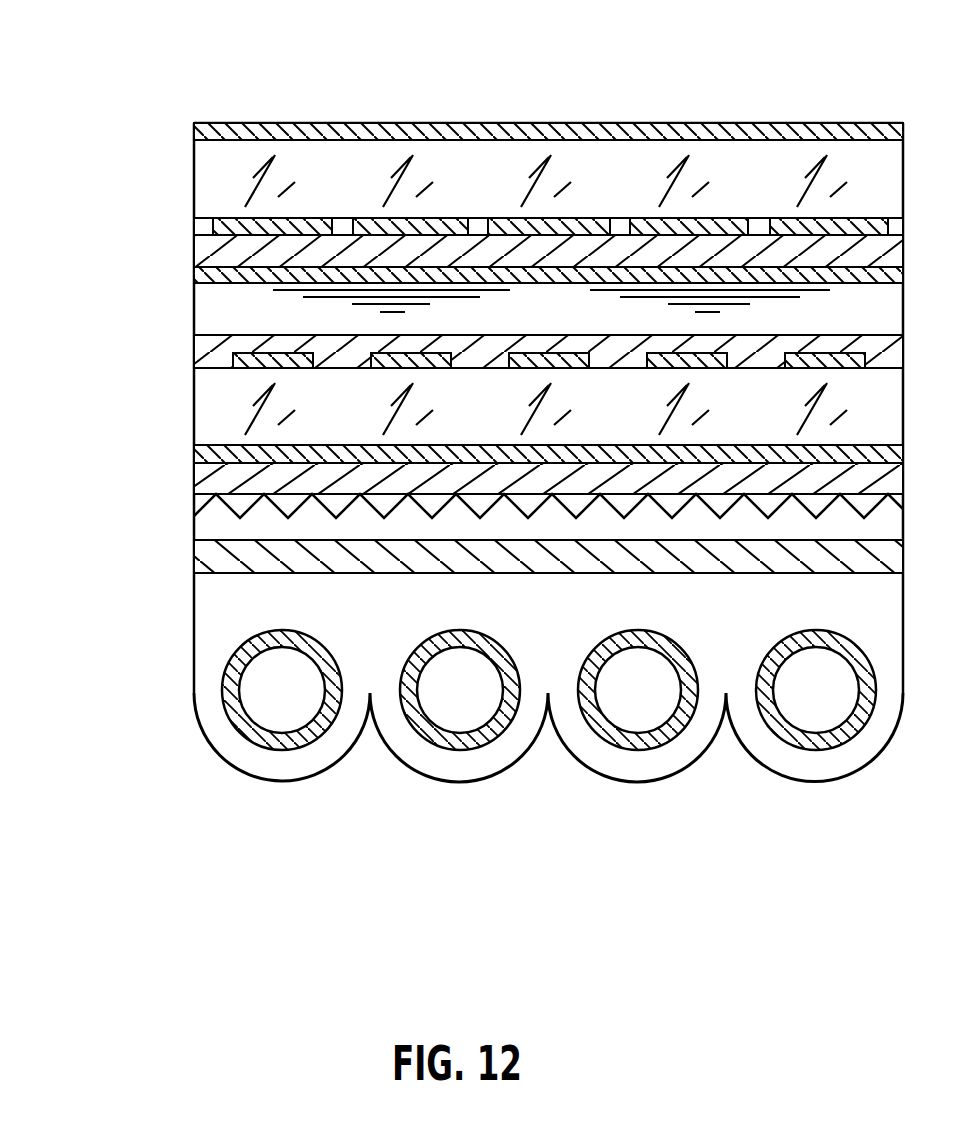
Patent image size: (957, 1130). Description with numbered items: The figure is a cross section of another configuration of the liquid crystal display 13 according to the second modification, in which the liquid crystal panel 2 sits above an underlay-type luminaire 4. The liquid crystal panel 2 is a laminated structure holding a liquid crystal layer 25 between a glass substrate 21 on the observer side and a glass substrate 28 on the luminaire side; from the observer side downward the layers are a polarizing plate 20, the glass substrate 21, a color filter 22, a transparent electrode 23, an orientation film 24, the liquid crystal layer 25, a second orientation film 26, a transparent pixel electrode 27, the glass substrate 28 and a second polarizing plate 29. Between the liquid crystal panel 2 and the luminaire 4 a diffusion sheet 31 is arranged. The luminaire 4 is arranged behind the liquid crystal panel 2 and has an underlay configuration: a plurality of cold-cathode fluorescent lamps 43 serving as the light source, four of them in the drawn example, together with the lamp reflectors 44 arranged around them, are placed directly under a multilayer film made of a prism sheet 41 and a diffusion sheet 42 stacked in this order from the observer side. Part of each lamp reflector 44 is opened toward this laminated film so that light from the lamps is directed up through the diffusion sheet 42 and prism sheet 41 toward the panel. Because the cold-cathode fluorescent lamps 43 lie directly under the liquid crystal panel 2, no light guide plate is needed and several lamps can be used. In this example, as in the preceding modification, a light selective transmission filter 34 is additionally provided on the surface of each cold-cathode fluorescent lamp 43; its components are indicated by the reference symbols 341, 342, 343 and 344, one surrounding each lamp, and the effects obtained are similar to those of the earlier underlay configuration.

The liquid crystal panel 2 is at (75, 60).
The luminaire 4 is at (73, 508).
The liquid crystal display device 13 is at (729, 86).
The polarizing plate 20 is at (193, 125).
The glass substrate 21 is at (200, 135).
The color filter 22 is at (220, 167).
The transparent electrode 23 is at (193, 228).
The orientation film 24 is at (196, 252).
The liquid crystal layer 25 is at (193, 278).
The orientation film 26 is at (195, 345).
The transparent pixel electrode 27 is at (197, 360).
The glass substrate 28 is at (215, 392).
The polarizing plate 29 is at (194, 455).
The diffusion sheet 31 is at (200, 482).
The light selective transmission filter 34 is at (851, 901).
The prism sheet 41 is at (200, 518).
The diffusion sheet 42 is at (197, 567).
The cold-cathode fluorescent lamp 43 is at (253, 678).
The lamp reflector 44 is at (205, 745).
The light selective transmission filter component 341 is at (286, 745).
The light selective transmission filter component 342 is at (464, 745).
The light selective transmission filter component 343 is at (642, 745).
The light selective transmission filter component 344 is at (820, 745).